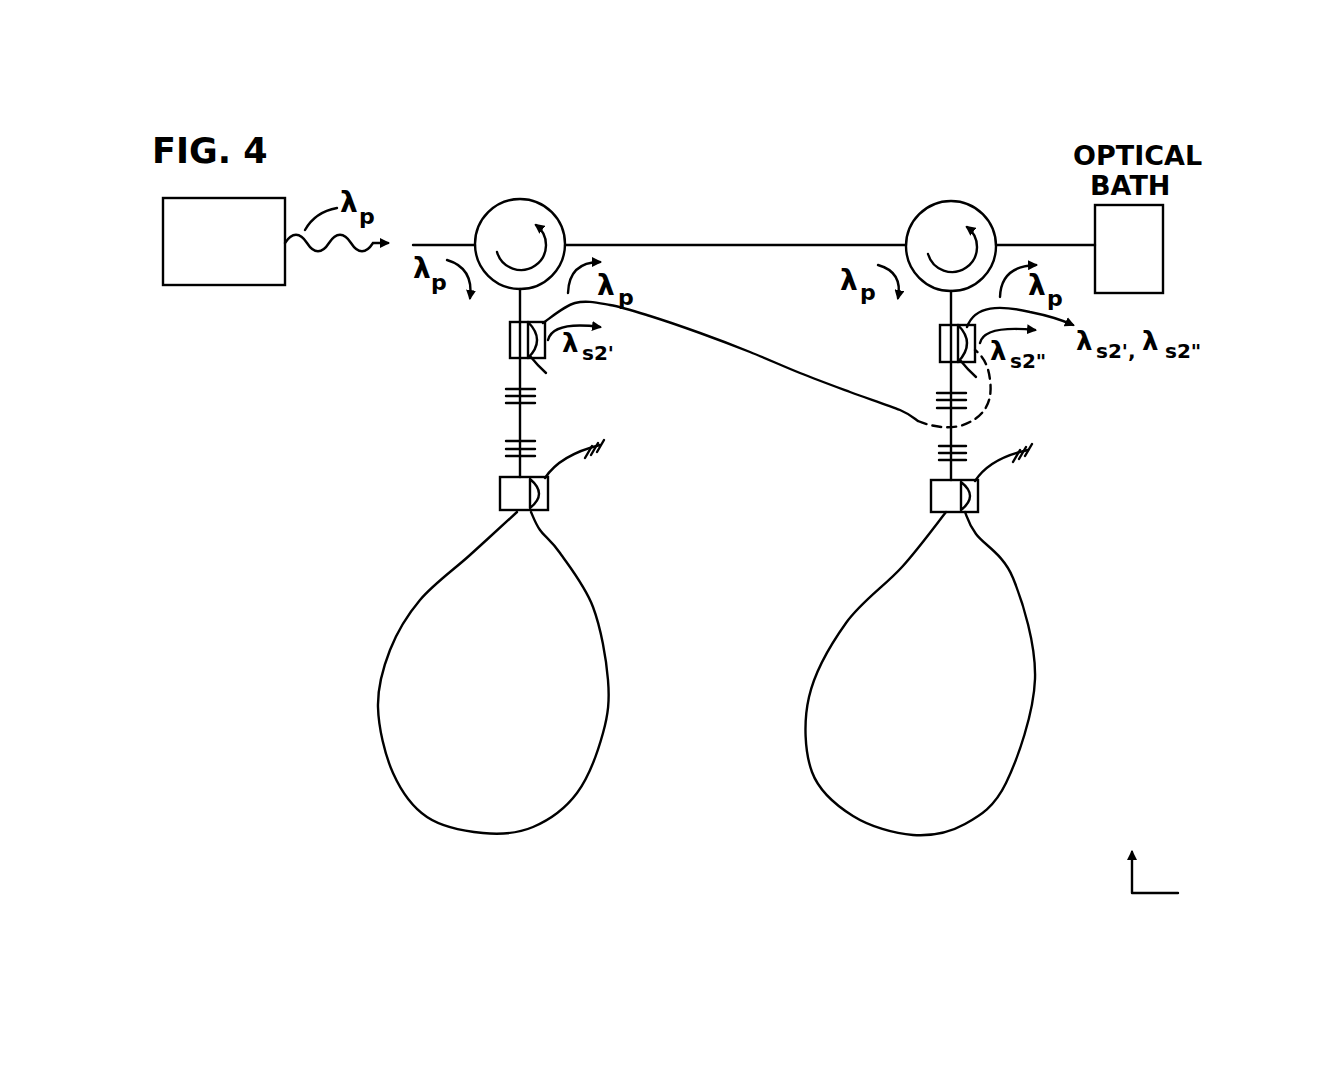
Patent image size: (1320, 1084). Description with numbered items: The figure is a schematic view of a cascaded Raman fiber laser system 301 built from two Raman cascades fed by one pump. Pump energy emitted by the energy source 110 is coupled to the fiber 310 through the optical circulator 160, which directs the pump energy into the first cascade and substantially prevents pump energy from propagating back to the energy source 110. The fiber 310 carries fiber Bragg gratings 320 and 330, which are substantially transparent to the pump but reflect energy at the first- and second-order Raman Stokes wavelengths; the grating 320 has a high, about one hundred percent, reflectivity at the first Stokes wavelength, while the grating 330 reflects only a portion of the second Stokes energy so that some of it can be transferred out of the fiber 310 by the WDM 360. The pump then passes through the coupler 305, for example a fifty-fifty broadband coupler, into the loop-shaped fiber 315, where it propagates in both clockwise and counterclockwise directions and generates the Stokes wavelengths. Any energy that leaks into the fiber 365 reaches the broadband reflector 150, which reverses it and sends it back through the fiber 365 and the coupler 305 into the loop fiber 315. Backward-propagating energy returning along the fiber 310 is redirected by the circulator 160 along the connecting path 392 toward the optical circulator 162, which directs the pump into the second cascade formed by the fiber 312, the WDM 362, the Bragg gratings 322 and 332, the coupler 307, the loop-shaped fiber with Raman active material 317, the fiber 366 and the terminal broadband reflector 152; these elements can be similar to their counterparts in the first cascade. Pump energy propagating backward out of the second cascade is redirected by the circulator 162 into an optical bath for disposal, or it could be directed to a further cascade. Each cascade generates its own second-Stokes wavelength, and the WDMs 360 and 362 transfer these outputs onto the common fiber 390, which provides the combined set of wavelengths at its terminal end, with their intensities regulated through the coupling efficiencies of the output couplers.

The energy source 110 is at (248, 257).
The optical circulator 160 is at (522, 198).
The optical circulator 162 is at (963, 204).
The optical fiber connecting circulators 392 is at (718, 246).
The common fiber 390 is at (705, 333).
The fiber 310 is at (518, 305).
The fiber 312 is at (950, 310).
The WDM 360 is at (510, 342).
The WDM 362 is at (940, 350).
The fiber Bragg grating 320 is at (506, 394).
The Bragg grating 322 is at (937, 395).
The fiber Bragg grating 330 is at (506, 448).
The Bragg grating 332 is at (939, 452).
The coupler 305 is at (500, 489).
The coupler 307 is at (978, 500).
The fiber 365 is at (565, 462).
The fiber 366 is at (998, 462).
The broadband reflector 150 is at (604, 443).
The terminal broadband reflector 152 is at (1034, 446).
The loop-shaped fiber 315 is at (510, 832).
The loop-shaped fiber with Raman active material 317 is at (957, 828).
The cascaded laser system 301 is at (1240, 908).